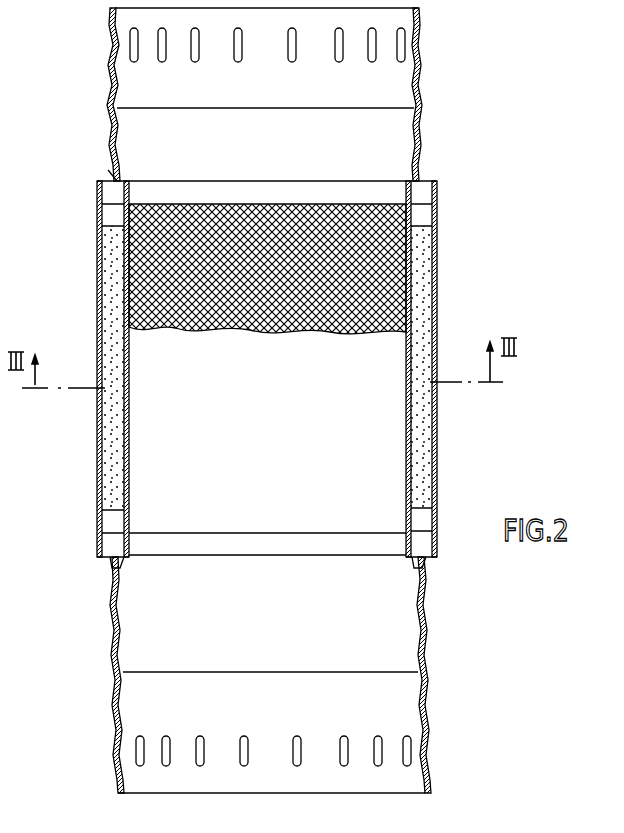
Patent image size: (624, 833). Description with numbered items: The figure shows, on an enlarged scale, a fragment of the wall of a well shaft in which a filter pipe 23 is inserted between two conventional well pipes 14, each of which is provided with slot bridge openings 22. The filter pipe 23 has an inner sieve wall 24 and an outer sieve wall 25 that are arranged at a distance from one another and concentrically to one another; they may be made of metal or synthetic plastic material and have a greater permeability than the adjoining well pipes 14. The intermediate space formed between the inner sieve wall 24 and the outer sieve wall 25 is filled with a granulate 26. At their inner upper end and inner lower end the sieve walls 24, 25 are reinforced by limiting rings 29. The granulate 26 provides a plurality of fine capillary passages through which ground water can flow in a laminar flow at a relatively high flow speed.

The well pipe 14 is at (108, 80).
The slot bridge opening 22 is at (421, 38).
The filter pipe 23 is at (100, 167).
The inner sieve wall 24 is at (172, 322).
The outer sieve wall 25 is at (102, 488).
The granulate 26 is at (110, 292).
The limiting ring 29 is at (210, 183).